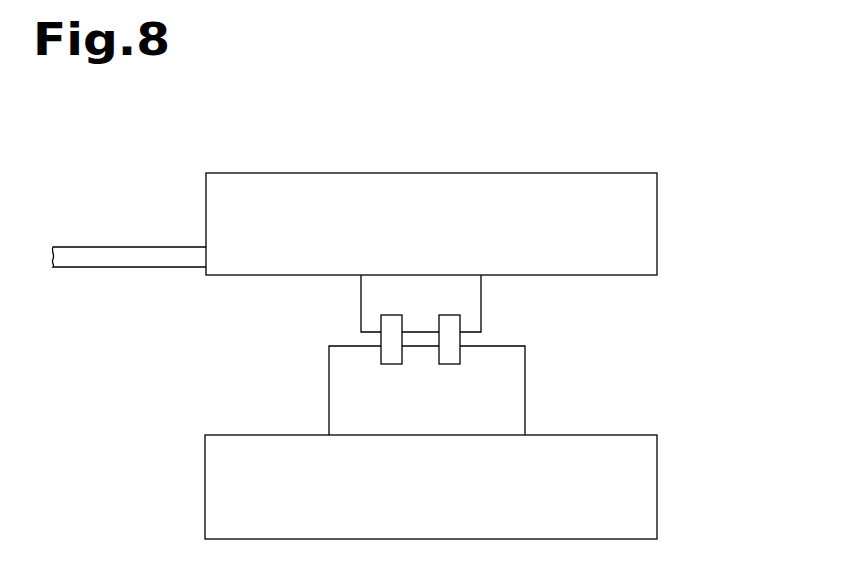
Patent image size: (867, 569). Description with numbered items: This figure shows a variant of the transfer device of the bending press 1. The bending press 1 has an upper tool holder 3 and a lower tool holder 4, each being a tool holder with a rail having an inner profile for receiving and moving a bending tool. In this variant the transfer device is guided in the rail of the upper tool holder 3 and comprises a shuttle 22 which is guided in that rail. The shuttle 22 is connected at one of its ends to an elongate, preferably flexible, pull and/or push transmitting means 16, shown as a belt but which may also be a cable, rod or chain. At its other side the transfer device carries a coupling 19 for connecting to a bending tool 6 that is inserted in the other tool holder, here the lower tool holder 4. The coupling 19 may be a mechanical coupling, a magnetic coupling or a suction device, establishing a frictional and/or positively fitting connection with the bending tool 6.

The bending press 1 is at (688, 138).
The upper tool holder 3 is at (433, 237).
The lower tool holder 4 is at (433, 500).
The bending tool 6 is at (433, 406).
The pull and/or push transmitting means 16 is at (137, 247).
The coupling 19 is at (460, 339).
The shuttle 22 is at (482, 298).